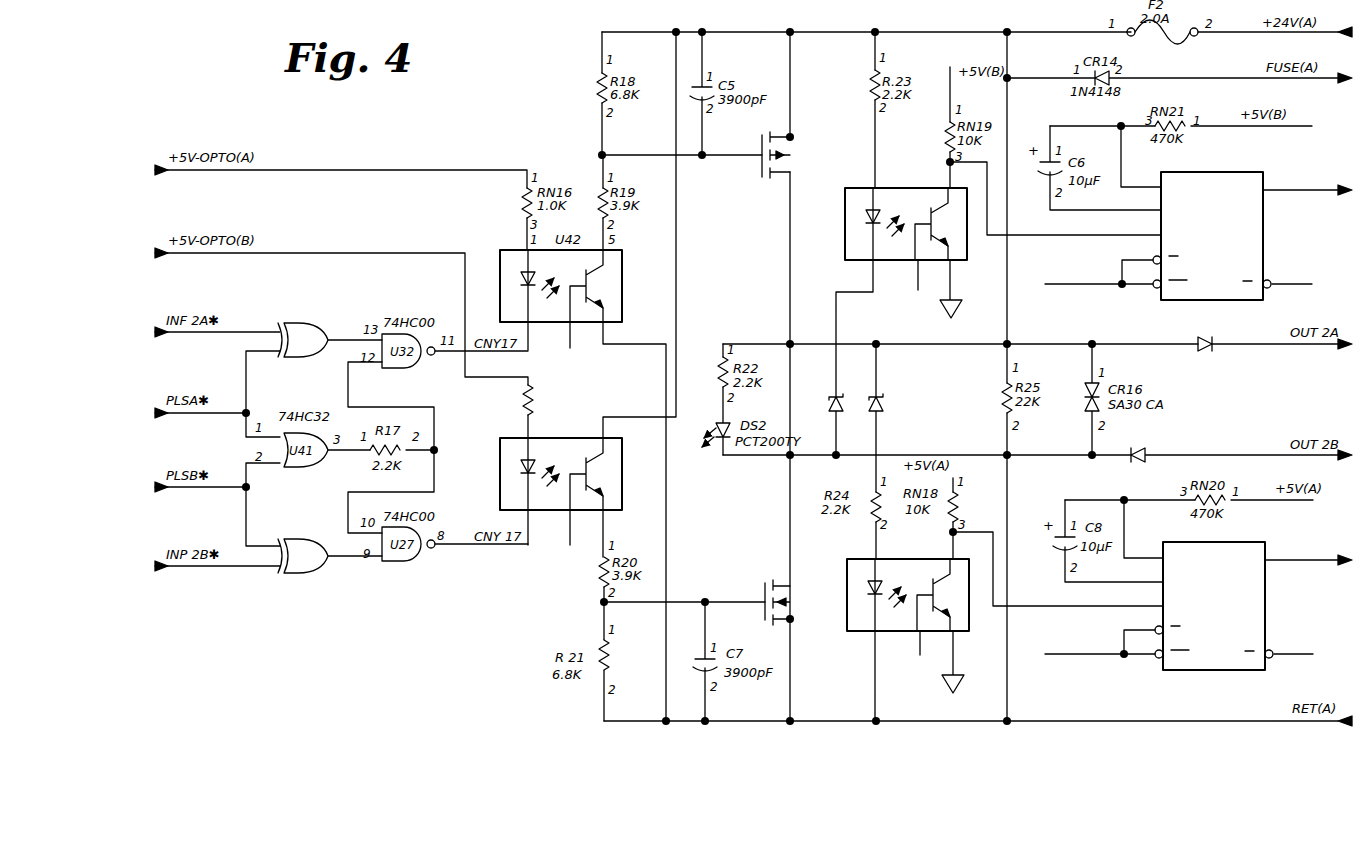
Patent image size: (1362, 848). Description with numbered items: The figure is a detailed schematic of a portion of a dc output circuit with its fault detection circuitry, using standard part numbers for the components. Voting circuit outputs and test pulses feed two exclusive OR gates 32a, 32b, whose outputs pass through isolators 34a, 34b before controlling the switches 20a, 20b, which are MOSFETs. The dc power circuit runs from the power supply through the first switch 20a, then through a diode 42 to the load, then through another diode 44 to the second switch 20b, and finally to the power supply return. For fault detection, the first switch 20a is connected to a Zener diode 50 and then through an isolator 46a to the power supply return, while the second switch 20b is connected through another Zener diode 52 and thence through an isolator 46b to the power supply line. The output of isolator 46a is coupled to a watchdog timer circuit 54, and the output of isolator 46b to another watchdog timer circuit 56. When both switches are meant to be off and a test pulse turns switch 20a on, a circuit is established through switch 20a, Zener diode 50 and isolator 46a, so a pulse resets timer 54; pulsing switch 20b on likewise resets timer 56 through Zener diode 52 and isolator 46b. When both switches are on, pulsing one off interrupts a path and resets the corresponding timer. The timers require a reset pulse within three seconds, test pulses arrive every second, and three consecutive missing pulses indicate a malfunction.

The first switch 20a is at (804, 129).
The second switch 20b is at (803, 643).
The exclusive OR gate 32a is at (298, 361).
The exclusive OR gate 32b is at (306, 569).
The isolator 34a is at (500, 258).
The isolator 34b is at (500, 460).
The diode 42 is at (1235, 340).
The diode 44 is at (1168, 447).
The isolator 46a is at (866, 558).
The isolator 46b is at (845, 225).
The Zener diode 50 is at (886, 388).
The Zener diode 52 is at (828, 388).
The watchdog timer circuit 54 is at (1177, 674).
The watchdog timer circuit 56 is at (1175, 302).